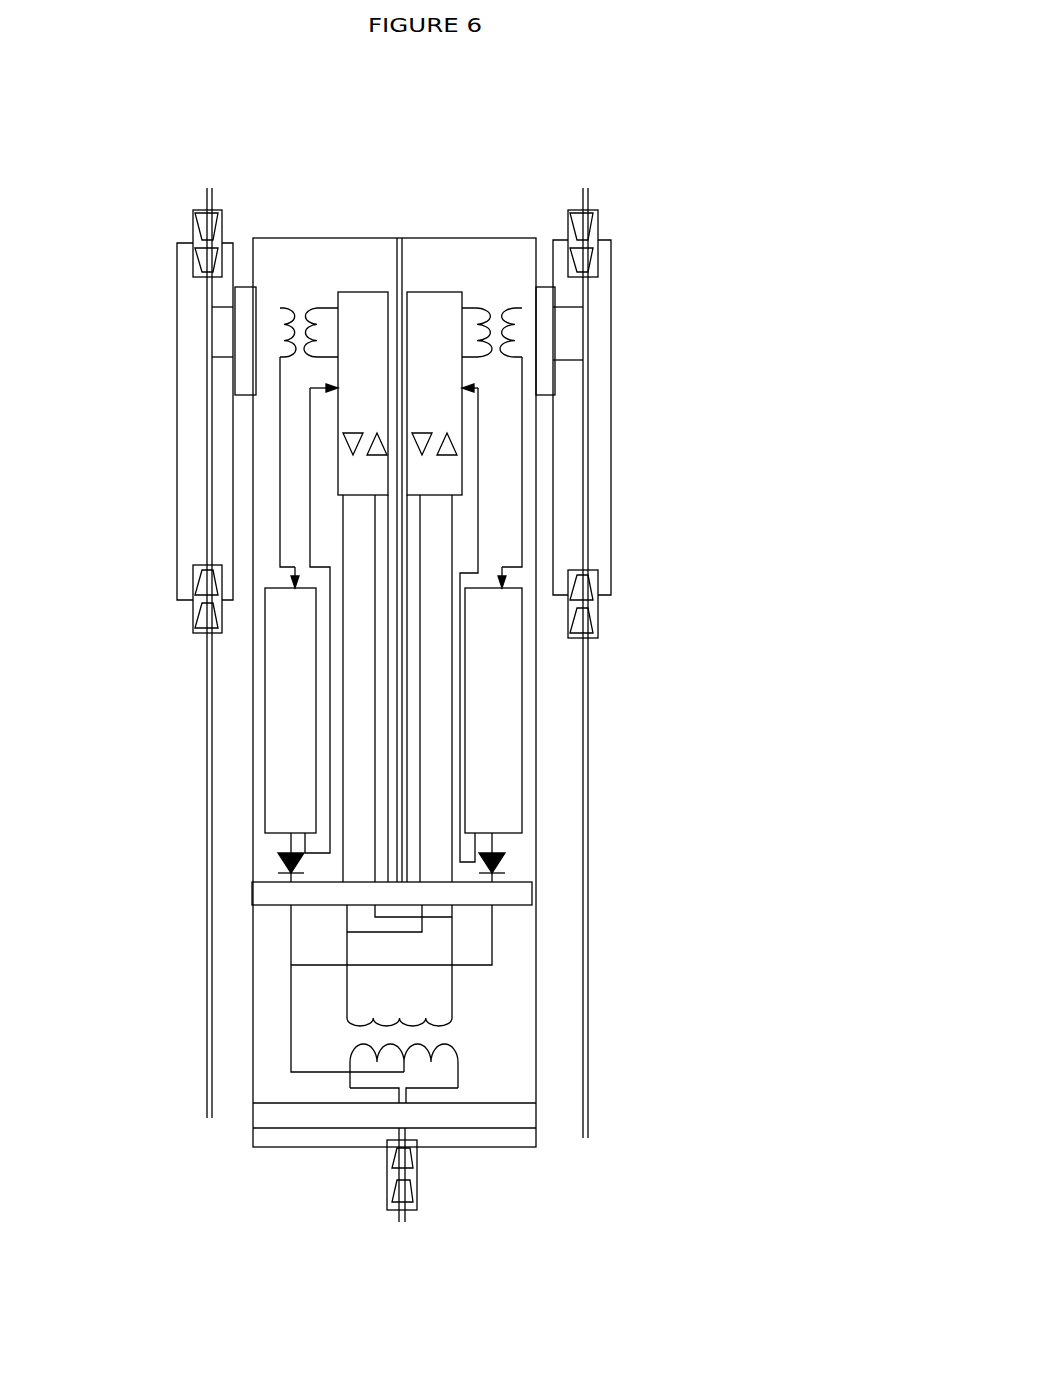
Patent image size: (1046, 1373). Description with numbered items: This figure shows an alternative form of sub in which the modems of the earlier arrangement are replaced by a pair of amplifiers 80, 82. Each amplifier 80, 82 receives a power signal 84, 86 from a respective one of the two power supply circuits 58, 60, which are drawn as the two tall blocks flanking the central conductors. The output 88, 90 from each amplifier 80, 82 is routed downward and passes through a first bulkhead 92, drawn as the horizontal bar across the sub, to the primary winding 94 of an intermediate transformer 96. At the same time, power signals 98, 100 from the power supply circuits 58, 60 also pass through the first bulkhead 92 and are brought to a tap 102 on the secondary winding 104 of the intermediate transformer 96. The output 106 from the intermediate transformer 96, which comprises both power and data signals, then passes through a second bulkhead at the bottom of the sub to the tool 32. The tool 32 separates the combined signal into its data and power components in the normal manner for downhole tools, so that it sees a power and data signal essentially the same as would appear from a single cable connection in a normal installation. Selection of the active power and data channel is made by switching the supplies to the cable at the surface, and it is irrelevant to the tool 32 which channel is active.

The tool 32 is at (338, 1183).
The power supply circuit 58 is at (257, 715).
The power supply circuit 60 is at (521, 716).
The amplifier 80 is at (354, 345).
The amplifier 82 is at (464, 356).
The power signal 84 is at (287, 473).
The power signal 86 is at (509, 449).
The output 88 is at (324, 493).
The output 90 is at (482, 538).
The first bulkhead 92 is at (554, 894).
The primary winding 94 is at (486, 1024).
The intermediate transformer 96 is at (490, 1055).
The power signal 98 is at (266, 940).
The power signal 100 is at (523, 949).
The tap 102 is at (422, 1089).
The secondary winding 104 is at (476, 1087).
The output 106 is at (426, 1160).